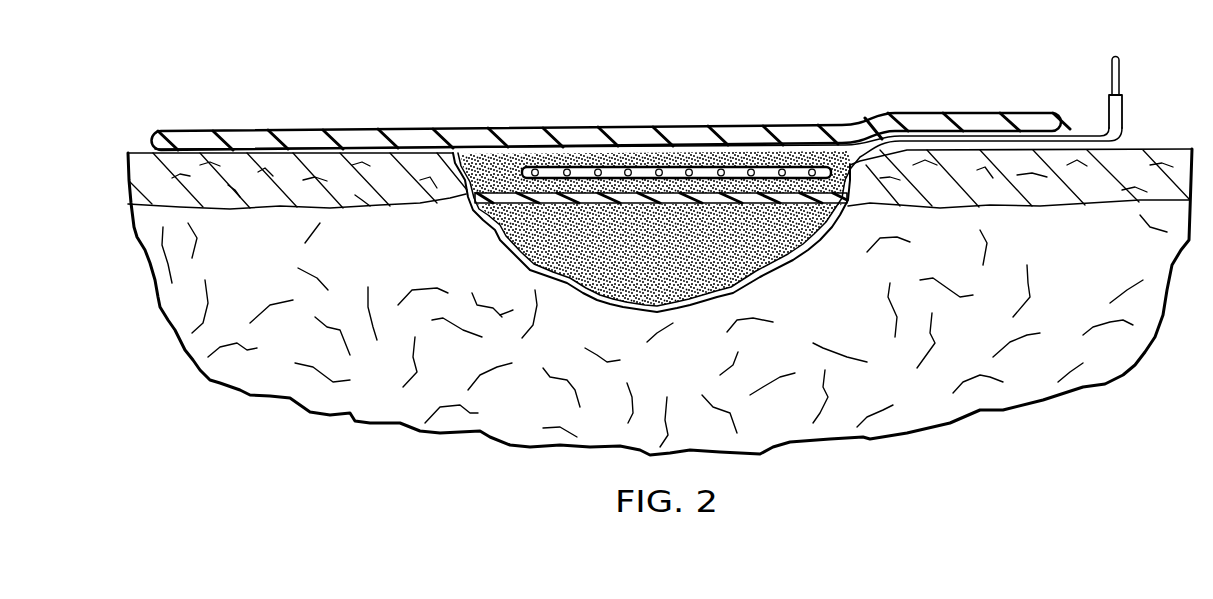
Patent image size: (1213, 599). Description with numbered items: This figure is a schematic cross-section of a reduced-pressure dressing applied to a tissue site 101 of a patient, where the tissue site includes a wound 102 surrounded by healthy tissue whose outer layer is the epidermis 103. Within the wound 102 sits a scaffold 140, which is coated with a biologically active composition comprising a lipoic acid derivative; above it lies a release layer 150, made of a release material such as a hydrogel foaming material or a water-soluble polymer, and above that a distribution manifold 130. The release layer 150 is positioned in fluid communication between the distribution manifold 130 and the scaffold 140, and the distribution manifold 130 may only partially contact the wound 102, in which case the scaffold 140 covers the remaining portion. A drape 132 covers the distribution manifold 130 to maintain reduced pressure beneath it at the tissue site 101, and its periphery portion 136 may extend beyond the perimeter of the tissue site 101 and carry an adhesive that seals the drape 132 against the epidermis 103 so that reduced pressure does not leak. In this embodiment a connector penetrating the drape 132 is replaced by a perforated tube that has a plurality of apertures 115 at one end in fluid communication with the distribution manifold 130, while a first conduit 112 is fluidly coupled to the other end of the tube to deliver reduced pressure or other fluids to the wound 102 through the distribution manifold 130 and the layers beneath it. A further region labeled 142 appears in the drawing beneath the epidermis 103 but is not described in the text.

The tissue site 101 is at (683, 378).
The wound 102 is at (791, 248).
The epidermis 103 is at (232, 205).
The first conduit 112 is at (1123, 72).
The apertures 115 is at (1123, 110).
The distribution manifold 130 is at (796, 158).
The drape 132 is at (505, 127).
The periphery portion 136 is at (176, 129).
The scaffold 140 is at (683, 262).
The subcutaneous tissue 142 is at (365, 198).
The release layer 150 is at (537, 198).